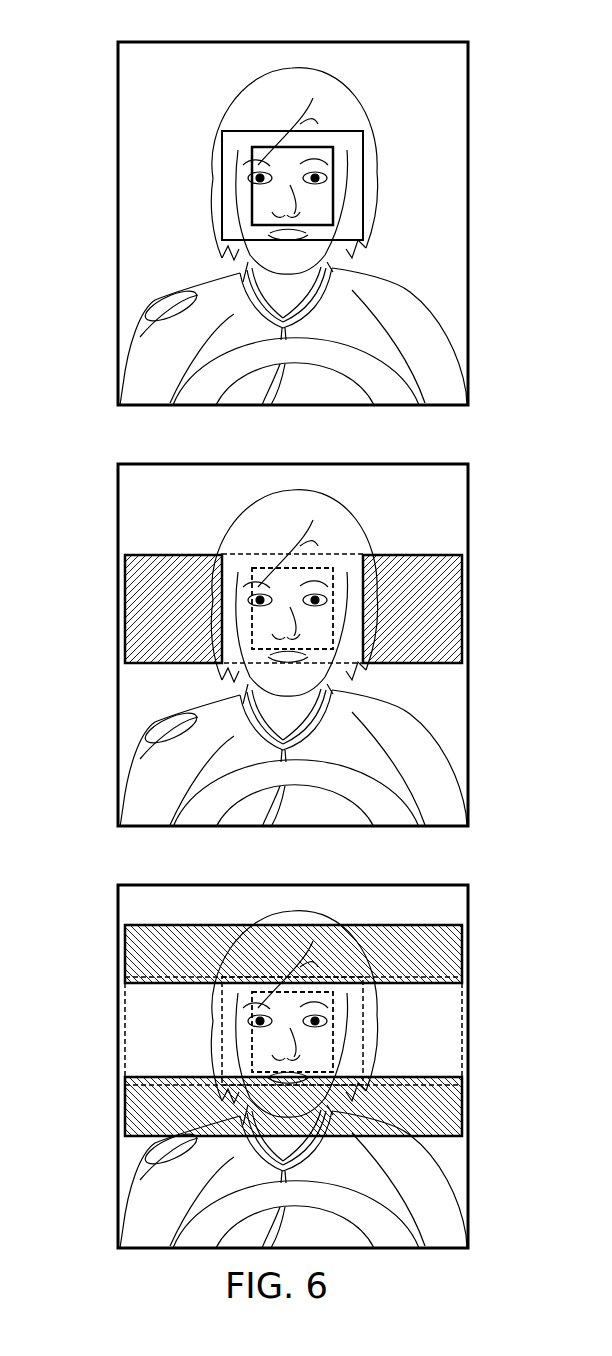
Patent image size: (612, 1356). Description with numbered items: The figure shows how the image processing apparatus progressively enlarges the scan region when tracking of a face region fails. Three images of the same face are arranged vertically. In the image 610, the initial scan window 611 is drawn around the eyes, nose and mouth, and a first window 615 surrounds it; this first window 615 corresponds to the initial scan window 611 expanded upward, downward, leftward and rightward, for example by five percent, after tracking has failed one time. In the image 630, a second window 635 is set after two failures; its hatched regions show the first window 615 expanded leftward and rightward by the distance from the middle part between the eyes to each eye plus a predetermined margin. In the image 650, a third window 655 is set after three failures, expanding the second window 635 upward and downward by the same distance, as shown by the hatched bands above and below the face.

The image 610 is at (295, 208).
The initial scan window 611 is at (247, 185).
The first window 615 is at (370, 183).
The image 630 is at (331, 630).
The second window 635 is at (470, 607).
The image 650 is at (331, 1051).
The third window 655 is at (470, 951).